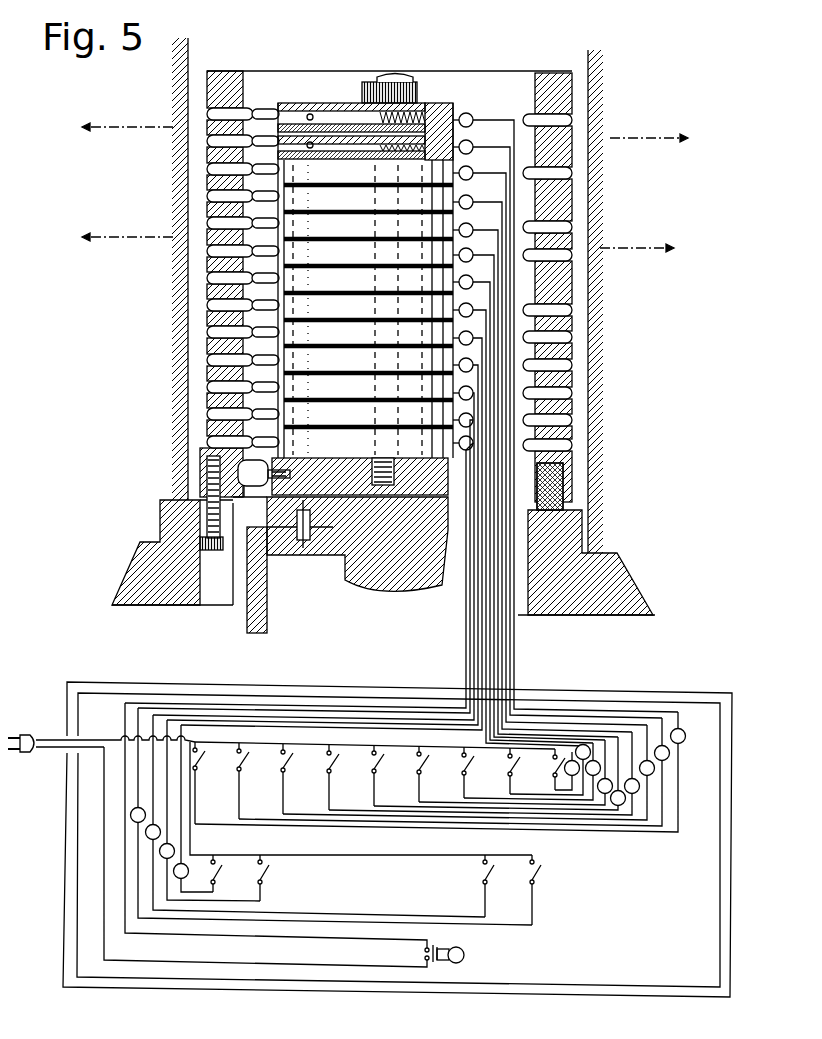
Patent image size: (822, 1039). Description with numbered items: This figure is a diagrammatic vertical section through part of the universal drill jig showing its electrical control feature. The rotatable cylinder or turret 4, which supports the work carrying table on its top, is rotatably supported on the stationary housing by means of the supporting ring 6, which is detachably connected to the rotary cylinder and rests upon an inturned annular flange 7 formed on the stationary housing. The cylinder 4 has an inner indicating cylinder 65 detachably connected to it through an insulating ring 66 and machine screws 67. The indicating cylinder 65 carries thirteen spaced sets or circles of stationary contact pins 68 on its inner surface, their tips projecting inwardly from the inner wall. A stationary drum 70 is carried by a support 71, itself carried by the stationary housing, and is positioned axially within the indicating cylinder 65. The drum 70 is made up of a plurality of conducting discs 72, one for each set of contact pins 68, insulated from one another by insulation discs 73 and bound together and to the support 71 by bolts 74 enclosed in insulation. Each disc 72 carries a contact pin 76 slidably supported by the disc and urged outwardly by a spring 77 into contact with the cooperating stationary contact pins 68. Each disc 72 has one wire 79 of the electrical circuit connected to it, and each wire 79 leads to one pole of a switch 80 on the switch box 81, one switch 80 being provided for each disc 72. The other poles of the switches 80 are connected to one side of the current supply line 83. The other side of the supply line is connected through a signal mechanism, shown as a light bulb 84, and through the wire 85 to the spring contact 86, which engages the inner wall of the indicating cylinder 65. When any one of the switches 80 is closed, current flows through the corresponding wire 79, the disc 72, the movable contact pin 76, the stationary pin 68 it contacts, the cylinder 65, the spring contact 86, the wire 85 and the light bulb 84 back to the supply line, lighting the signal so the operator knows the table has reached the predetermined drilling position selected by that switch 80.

The cylinder 4 is at (590, 212).
The supporting ring 6 is at (382, 134).
The inturned annular flange 7 is at (375, 244).
The indicating cylinder 65 is at (562, 289).
The insulating ring 66 is at (562, 482).
The machine screws 67 is at (212, 552).
The contact pins 68 is at (218, 305).
The stationary drum 70 is at (440, 103).
The support 71 is at (268, 600).
The discs 72 is at (287, 105).
The insulation discs 73 is at (457, 112).
The bolts 74 is at (385, 80).
The contact pin 76 is at (267, 110).
The spring 77 is at (432, 122).
The wires 79 is at (487, 160).
The switches 80 is at (200, 760).
The switch box 81 is at (573, 968).
The electrical current supply line 83 is at (47, 738).
The light bulb 84 is at (447, 965).
The wire 85 is at (462, 640).
The spring contact 86 is at (252, 480).